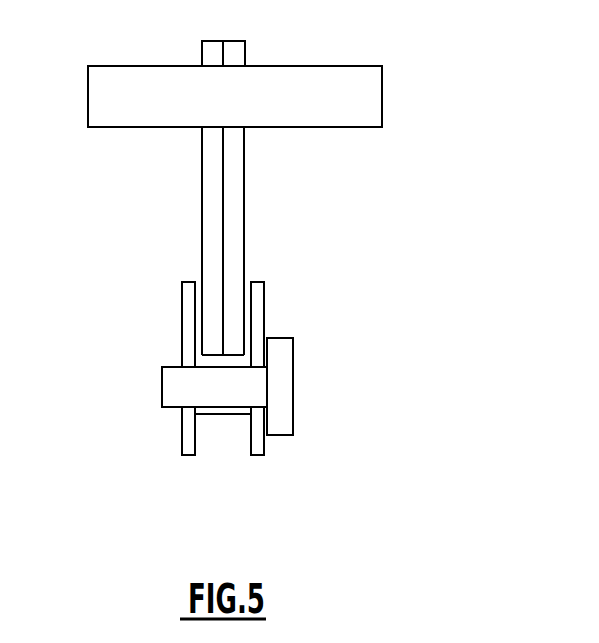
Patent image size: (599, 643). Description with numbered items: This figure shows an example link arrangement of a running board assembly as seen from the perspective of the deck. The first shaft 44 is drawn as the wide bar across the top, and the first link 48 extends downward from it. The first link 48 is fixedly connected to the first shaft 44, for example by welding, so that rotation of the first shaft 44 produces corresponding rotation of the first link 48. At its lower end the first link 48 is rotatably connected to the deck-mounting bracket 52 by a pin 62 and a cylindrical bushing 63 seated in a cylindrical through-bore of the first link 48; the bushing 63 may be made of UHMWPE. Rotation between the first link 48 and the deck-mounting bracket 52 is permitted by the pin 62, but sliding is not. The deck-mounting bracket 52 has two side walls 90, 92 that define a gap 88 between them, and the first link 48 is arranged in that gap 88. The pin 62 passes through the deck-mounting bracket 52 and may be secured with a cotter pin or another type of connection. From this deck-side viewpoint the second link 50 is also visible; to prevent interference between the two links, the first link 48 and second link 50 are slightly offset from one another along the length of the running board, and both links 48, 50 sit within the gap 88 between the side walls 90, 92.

The first shaft 44 is at (122, 117).
The first link 48 is at (207, 209).
The second link 50 is at (237, 180).
The deck-mounting bracket 52 is at (207, 365).
The pin 62 is at (162, 383).
The cylindrical bushing 63 is at (216, 415).
The gap 88 is at (232, 450).
The side wall 90 is at (260, 300).
The side wall 92 is at (187, 308).